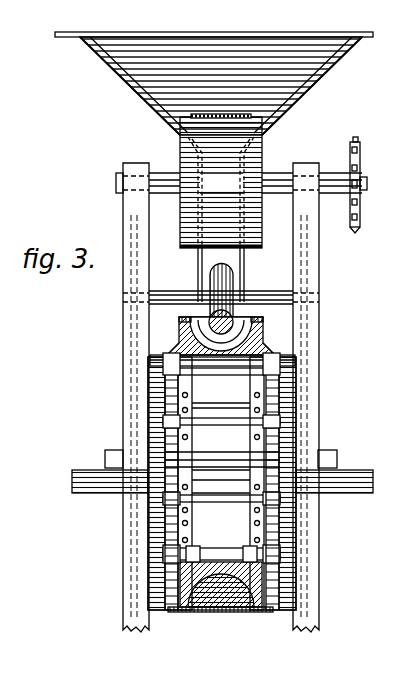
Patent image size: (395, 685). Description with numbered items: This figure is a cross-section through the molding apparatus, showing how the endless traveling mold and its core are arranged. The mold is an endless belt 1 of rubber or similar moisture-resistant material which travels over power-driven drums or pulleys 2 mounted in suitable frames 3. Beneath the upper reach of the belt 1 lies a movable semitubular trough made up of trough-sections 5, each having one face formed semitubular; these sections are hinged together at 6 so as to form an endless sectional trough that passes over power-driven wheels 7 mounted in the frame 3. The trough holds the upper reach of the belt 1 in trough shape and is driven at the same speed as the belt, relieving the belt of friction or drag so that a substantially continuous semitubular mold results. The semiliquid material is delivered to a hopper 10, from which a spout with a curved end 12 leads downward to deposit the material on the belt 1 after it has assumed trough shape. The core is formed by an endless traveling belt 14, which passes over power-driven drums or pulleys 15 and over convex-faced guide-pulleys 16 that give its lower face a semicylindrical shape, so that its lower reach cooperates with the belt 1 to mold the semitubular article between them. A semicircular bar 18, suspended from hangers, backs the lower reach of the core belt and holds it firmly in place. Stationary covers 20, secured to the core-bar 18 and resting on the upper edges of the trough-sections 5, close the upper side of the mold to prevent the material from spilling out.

The hopper 10 is at (292, 73).
The endless traveling belt 14 is at (240, 113).
The power-driven drums or pulleys 15 is at (253, 162).
The guide-pulleys 16 is at (220, 281).
The covers 20 is at (180, 318).
The bar 18 is at (267, 326).
The endless belt 1 is at (268, 341).
The trough-sections 5 is at (180, 344).
The curved end 12 is at (165, 354).
The hinges 6 is at (214, 421).
The frames 3 is at (306, 393).
The power-driven drums or pulleys 2 is at (283, 433).
The power-driven wheels 7 is at (173, 516).